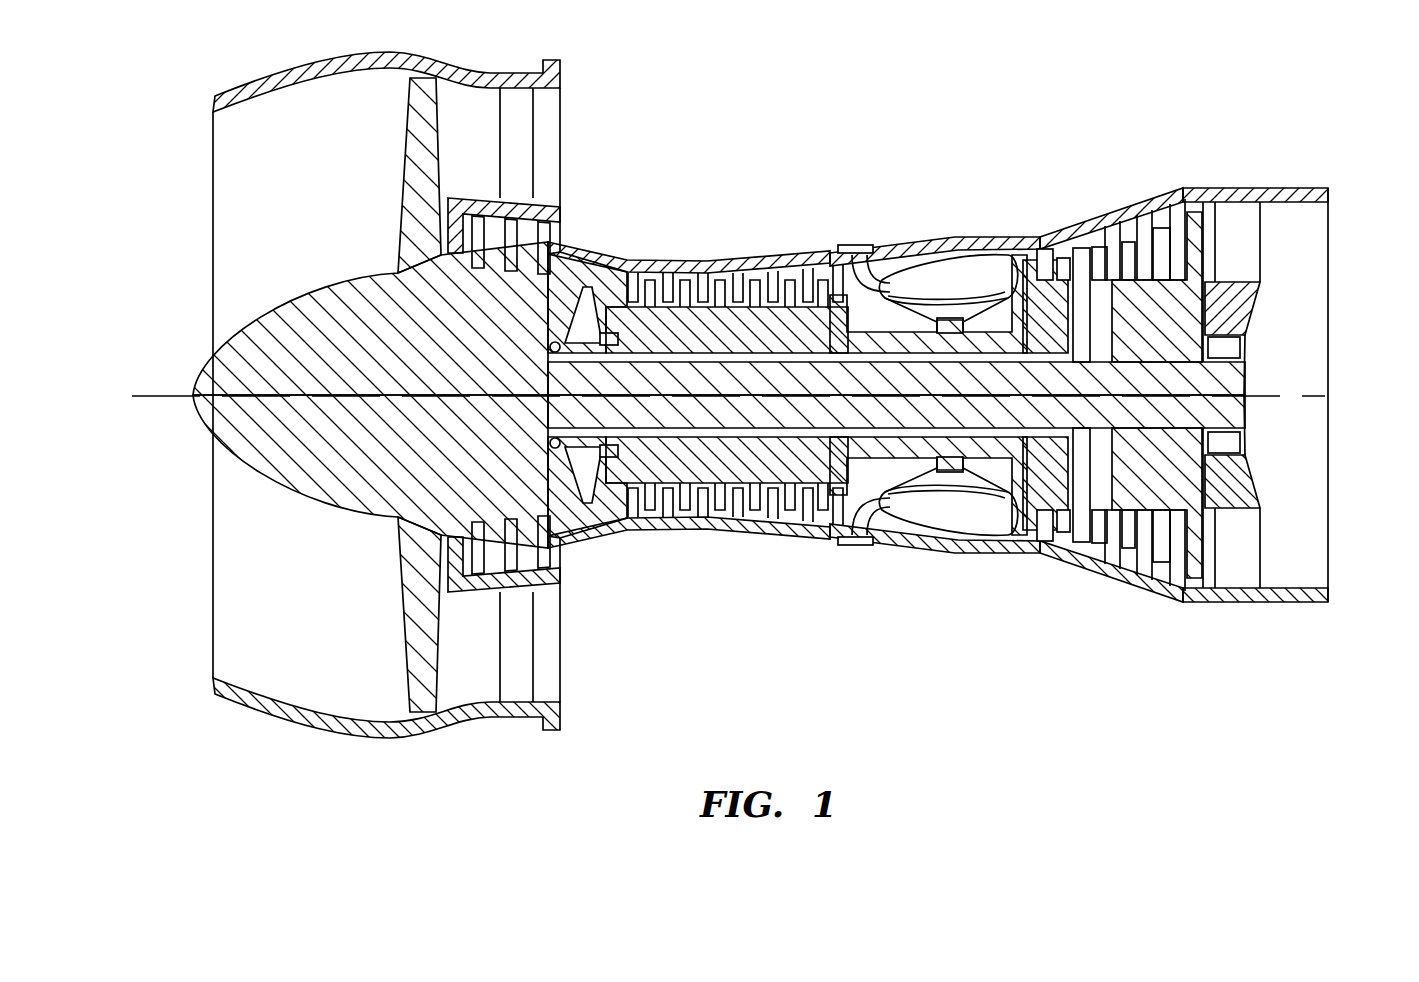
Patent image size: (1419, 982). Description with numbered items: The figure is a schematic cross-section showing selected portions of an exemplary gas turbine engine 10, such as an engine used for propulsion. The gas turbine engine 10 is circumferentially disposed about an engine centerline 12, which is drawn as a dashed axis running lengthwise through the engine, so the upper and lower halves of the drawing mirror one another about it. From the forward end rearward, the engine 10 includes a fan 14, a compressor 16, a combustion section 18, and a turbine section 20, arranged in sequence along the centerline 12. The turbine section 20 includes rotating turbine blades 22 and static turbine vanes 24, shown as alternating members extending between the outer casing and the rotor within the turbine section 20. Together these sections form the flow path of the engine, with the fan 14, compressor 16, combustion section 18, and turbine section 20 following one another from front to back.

The gas turbine engine 10 is at (760, 395).
The engine centerline 12 is at (160, 394).
The fan 14 is at (407, 159).
The compressor 16 is at (830, 225).
The combustion section 18 is at (1020, 225).
The turbine section 20 is at (1145, 340).
The turbine blades 22 is at (1130, 240).
The turbine vanes 24 is at (1112, 228).